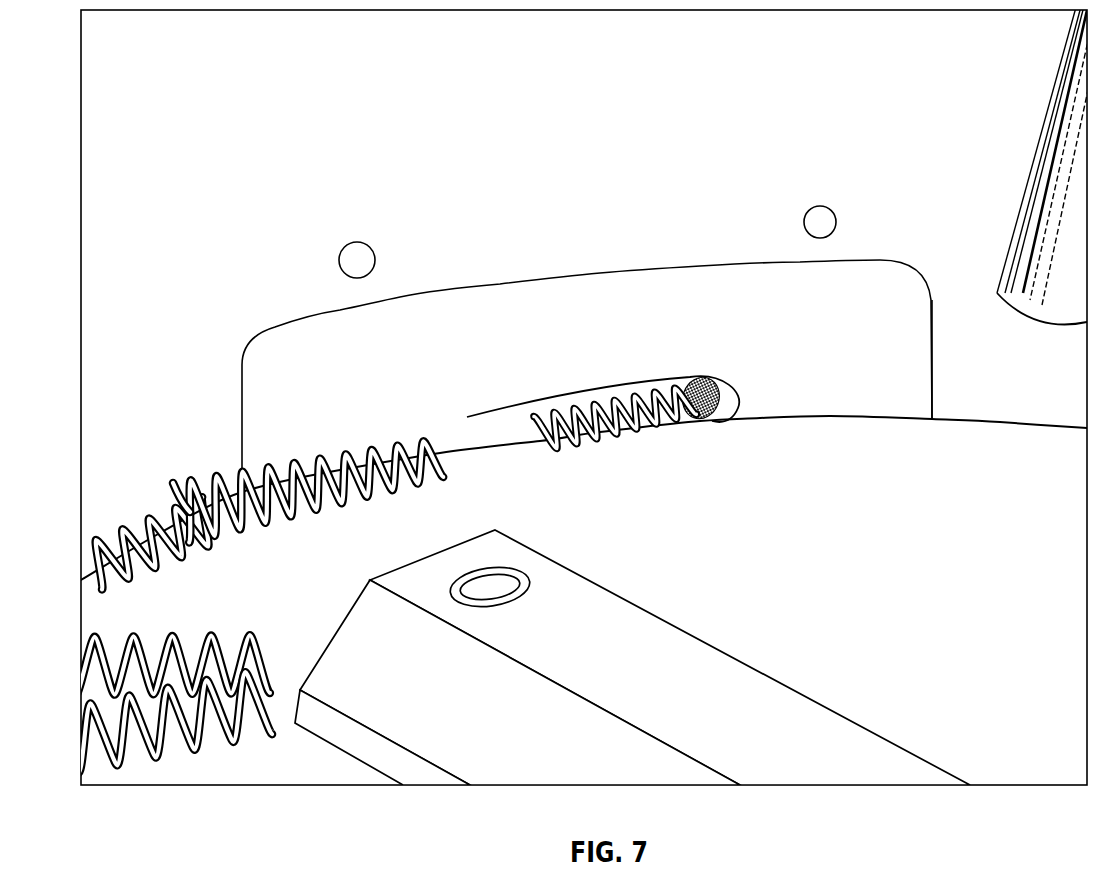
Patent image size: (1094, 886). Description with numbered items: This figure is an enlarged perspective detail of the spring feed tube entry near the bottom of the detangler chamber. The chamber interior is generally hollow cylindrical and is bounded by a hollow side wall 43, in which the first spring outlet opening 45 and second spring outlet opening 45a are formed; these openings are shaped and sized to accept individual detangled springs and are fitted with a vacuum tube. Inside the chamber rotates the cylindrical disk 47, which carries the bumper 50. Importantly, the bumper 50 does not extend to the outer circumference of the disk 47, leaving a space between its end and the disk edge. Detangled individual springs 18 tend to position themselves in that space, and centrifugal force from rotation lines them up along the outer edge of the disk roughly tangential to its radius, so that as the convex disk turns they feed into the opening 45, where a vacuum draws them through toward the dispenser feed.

The spring 18 is at (377, 453).
The hollow side wall 43 is at (919, 119).
The first spring outlet opening 45 is at (700, 385).
The second spring outlet opening 45a is at (933, 375).
The cylindrical disk 47 is at (879, 571).
The bumper 50 is at (580, 642).